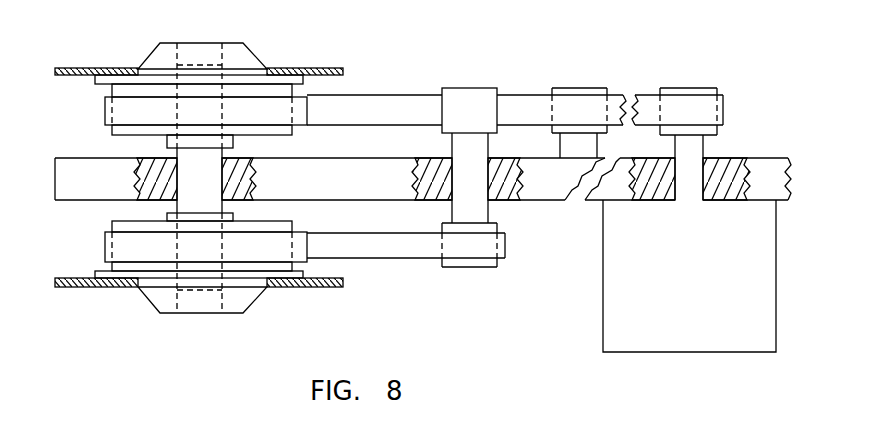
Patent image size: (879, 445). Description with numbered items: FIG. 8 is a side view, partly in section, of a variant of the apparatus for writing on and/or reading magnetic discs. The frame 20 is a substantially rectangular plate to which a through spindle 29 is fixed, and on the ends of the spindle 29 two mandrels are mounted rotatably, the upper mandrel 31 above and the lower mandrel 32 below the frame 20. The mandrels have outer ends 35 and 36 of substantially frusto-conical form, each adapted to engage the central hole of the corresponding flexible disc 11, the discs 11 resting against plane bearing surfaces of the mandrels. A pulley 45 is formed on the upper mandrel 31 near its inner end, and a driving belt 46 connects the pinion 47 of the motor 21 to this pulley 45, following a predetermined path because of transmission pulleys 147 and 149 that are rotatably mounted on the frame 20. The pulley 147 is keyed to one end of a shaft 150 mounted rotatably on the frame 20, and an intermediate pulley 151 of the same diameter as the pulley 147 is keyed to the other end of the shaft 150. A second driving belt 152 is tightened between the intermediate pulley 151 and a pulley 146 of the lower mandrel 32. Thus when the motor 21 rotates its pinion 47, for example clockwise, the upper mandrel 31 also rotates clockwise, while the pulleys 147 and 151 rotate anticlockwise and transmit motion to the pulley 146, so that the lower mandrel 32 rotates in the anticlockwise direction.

The flexible disc 11 is at (70, 68).
The frame 20 is at (88, 190).
The motor 21 is at (612, 336).
The through spindle 29 is at (190, 175).
The upper mandrel 31 is at (282, 80).
The lower mandrel 32 is at (288, 278).
The outer end of upper mandrel 35 is at (166, 55).
The outer end of lower mandrel 36 is at (165, 303).
The pulley 45 is at (127, 90).
The transmission belt 46 is at (381, 108).
The pinion 47 is at (688, 92).
The pulley of lower mandrel 146 is at (120, 265).
The transmission pulley 147 is at (466, 100).
The transmission pulley 149 is at (577, 92).
The shaft 150 is at (465, 148).
The intermediate pulley 151 is at (472, 262).
The second driving belt 152 is at (386, 252).